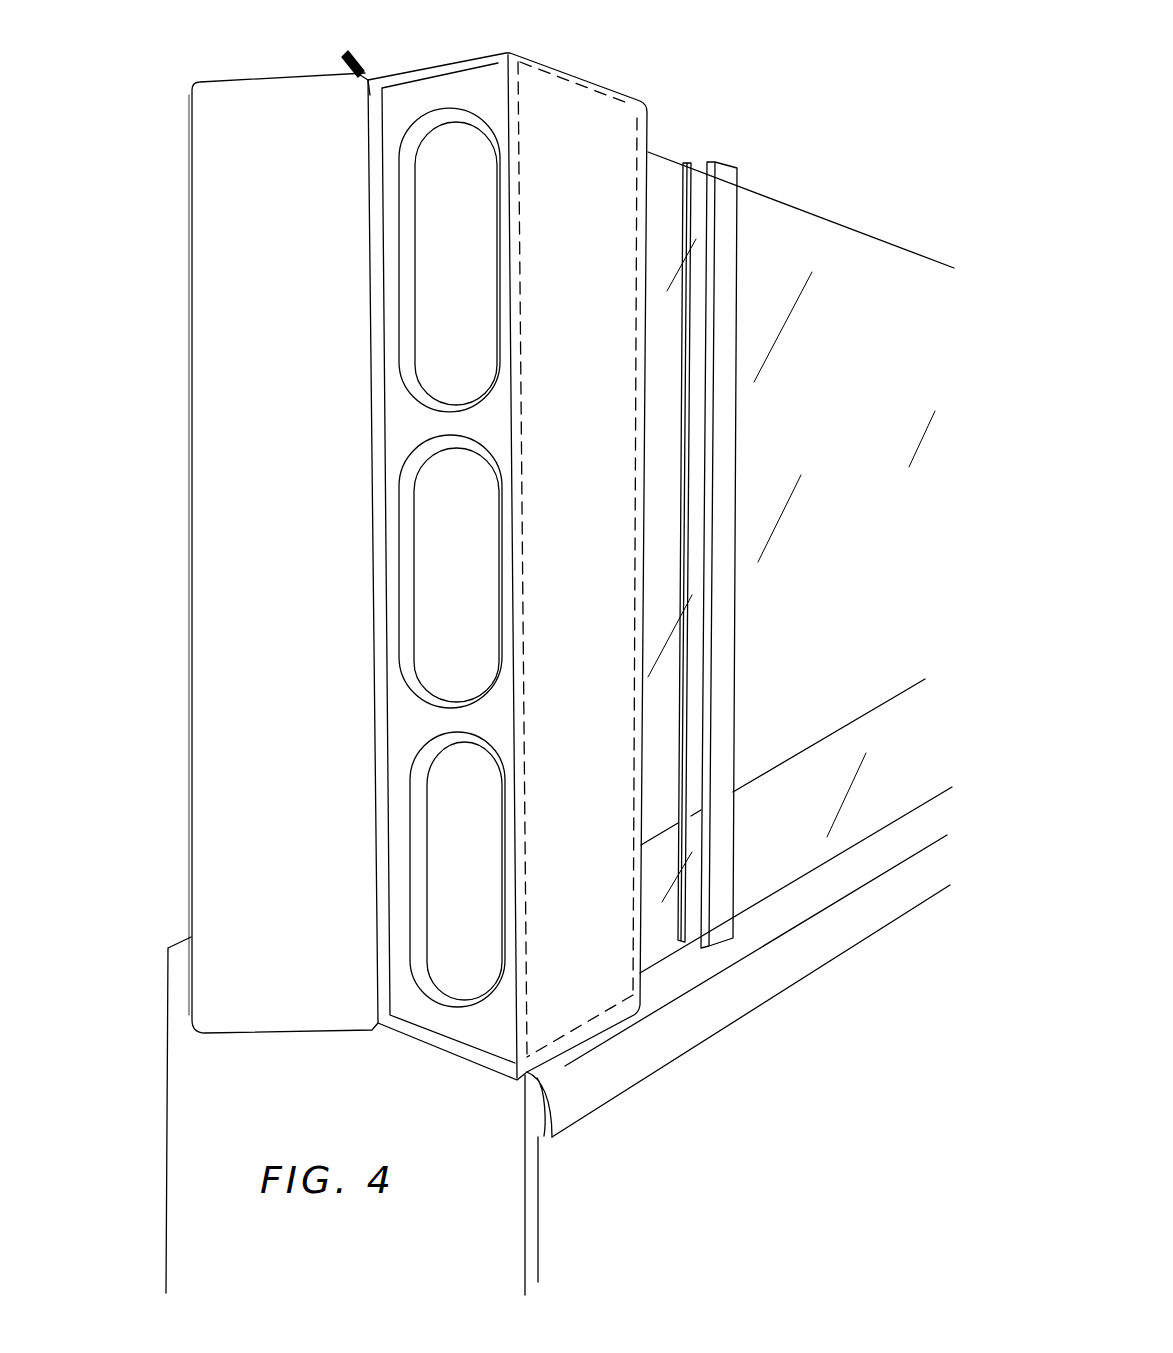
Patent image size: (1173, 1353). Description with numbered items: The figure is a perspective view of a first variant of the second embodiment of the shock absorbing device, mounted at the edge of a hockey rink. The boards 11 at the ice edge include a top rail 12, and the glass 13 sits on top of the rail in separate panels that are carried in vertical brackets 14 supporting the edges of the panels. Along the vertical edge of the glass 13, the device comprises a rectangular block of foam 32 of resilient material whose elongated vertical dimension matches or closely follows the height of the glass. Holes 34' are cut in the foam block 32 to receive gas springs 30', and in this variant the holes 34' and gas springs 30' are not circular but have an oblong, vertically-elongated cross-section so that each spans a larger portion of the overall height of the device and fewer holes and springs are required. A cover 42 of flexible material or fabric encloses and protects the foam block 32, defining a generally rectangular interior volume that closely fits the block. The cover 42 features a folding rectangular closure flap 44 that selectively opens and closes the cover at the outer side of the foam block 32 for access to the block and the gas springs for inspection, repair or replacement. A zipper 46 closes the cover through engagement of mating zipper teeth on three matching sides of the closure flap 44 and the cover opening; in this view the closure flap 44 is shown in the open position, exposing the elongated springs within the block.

The boards 11 is at (767, 1118).
The top rail 12 is at (785, 907).
The glass 13 is at (647, 177).
The vertical brackets 14 is at (725, 207).
The gas springs 30' is at (403, 260).
The block of foam 32 is at (402, 433).
The holes 34' is at (392, 263).
The cover 42 is at (606, 115).
The closure flap 44 is at (248, 478).
The zipper 46 is at (377, 69).